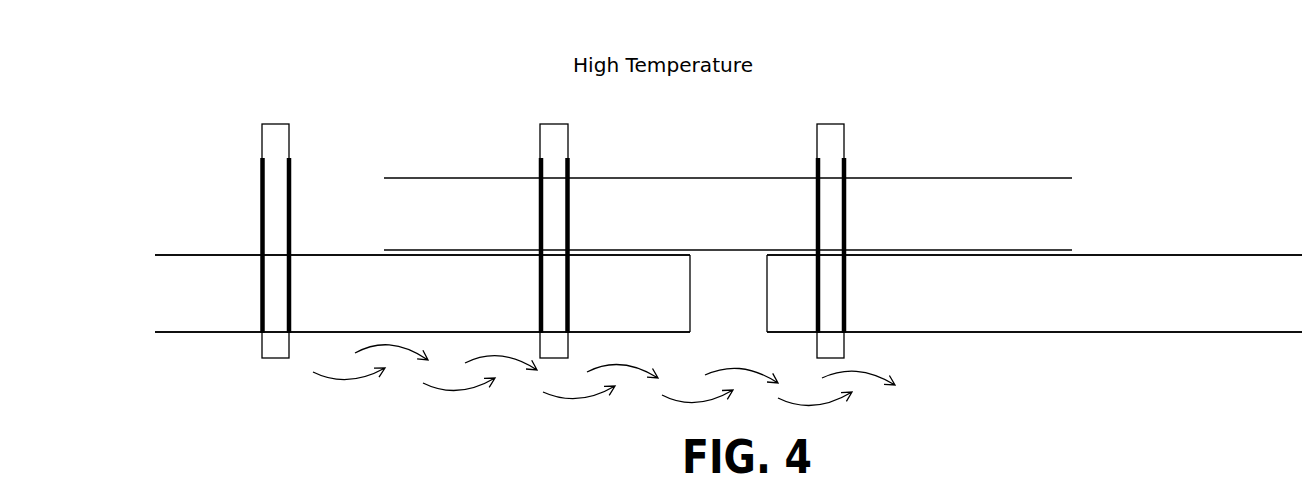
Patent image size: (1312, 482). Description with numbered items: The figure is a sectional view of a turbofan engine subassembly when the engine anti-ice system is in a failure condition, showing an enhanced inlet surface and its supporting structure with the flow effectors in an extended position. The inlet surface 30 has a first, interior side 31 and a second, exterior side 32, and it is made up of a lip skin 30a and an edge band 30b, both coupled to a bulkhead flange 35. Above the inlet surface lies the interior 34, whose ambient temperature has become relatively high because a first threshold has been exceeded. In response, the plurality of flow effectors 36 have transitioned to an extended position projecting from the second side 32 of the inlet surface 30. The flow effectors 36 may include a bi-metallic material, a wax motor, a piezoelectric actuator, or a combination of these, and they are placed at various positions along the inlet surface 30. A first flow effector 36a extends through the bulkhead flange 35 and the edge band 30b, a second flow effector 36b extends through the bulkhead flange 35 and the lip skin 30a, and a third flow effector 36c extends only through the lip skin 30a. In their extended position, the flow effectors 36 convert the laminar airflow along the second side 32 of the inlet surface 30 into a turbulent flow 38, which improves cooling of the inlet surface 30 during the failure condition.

The inlet surface 30 is at (295, 412).
The lip skin 30a is at (700, 310).
The edge band 30b is at (913, 315).
The first side 31 is at (172, 255).
The second side 32 is at (160, 333).
The interior 34 is at (452, 43).
The bulkhead flange 35 is at (443, 190).
The flow effectors 36 is at (212, 223).
The first flow effector 36a is at (846, 168).
The second flow effector 36b is at (539, 170).
The third flow effector 36c is at (262, 183).
The turbulent flow 38 is at (580, 401).